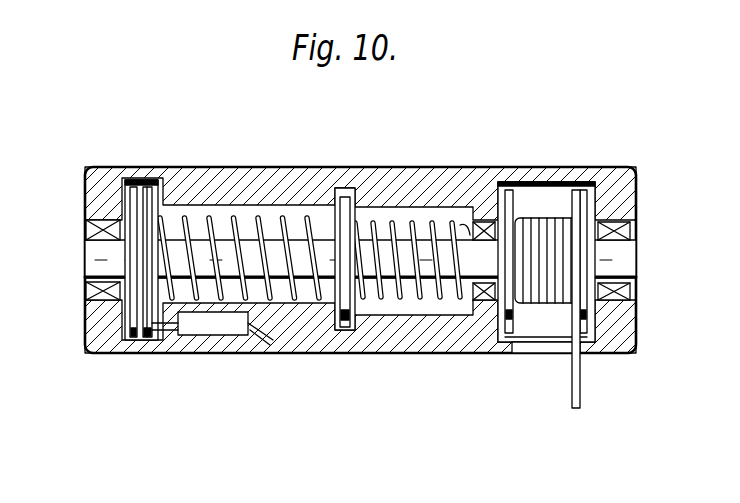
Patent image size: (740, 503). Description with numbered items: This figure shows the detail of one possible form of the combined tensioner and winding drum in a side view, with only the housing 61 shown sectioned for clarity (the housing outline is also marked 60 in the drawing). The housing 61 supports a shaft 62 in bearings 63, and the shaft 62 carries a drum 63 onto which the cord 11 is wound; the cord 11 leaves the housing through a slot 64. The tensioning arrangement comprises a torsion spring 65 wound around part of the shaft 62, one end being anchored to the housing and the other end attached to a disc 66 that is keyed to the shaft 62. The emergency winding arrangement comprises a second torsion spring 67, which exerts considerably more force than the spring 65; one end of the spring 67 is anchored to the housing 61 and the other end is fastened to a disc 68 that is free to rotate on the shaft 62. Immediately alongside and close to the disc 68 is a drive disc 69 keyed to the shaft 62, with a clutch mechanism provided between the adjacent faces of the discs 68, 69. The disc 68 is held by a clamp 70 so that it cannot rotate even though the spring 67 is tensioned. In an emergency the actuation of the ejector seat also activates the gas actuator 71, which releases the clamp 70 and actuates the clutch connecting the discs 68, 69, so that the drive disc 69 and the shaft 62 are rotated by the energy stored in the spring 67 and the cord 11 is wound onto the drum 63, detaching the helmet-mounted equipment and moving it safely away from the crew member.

The cord 11 is at (581, 393).
The housing 60 is at (437, 176).
The housing 61 is at (622, 256).
The shaft 62 is at (86, 292).
The drum 63 is at (517, 227).
The slot 64 is at (540, 351).
The torsion spring 65 is at (414, 296).
The disc 66 is at (343, 196).
The second torsion spring 67 is at (272, 226).
The disc 68 is at (157, 178).
The drive disc 69 is at (133, 339).
The clamp 70 is at (148, 177).
The gas actuator 71 is at (212, 329).